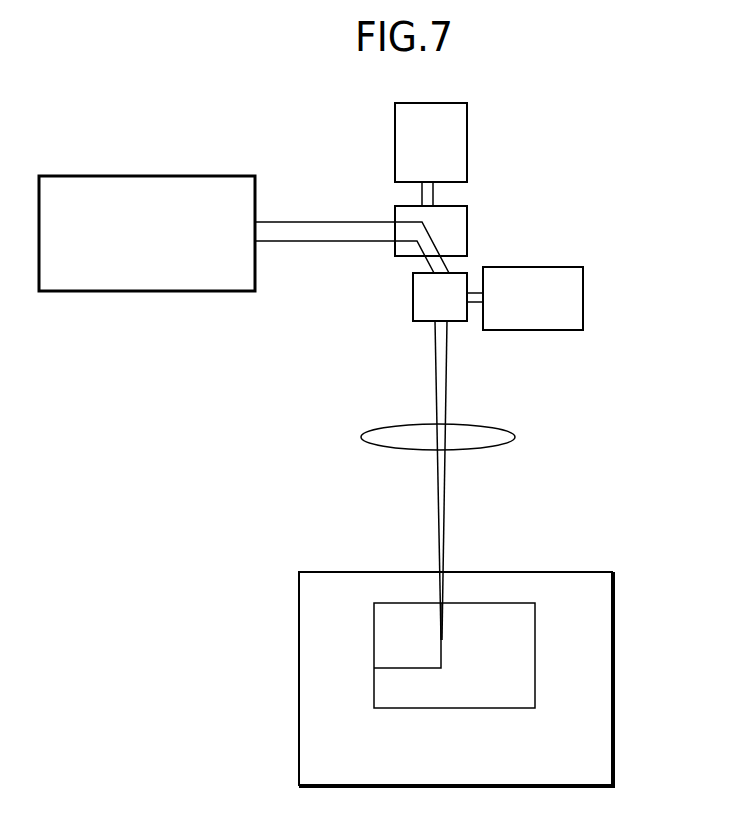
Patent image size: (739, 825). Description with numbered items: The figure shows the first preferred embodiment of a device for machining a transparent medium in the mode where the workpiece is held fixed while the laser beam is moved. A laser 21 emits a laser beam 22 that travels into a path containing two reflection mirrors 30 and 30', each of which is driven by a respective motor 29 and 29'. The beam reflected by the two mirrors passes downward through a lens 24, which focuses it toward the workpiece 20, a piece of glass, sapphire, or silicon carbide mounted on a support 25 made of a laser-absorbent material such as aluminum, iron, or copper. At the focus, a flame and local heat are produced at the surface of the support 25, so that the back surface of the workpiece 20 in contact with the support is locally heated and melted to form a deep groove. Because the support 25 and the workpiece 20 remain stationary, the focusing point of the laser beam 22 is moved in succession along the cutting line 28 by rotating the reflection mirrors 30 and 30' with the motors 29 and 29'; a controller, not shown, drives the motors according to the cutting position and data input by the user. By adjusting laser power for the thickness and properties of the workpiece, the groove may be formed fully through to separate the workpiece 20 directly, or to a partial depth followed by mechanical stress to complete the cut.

The workpiece 20 is at (535, 645).
The laser 21 is at (150, 292).
The laser beam 22 is at (345, 222).
The lens 24 is at (515, 437).
The support 25 is at (317, 572).
The cutting line 28 is at (408, 668).
The motor 29 is at (485, 154).
The motor 29' is at (582, 298).
The reflection mirror 30 is at (383, 245).
The reflection mirror 30' is at (386, 303).